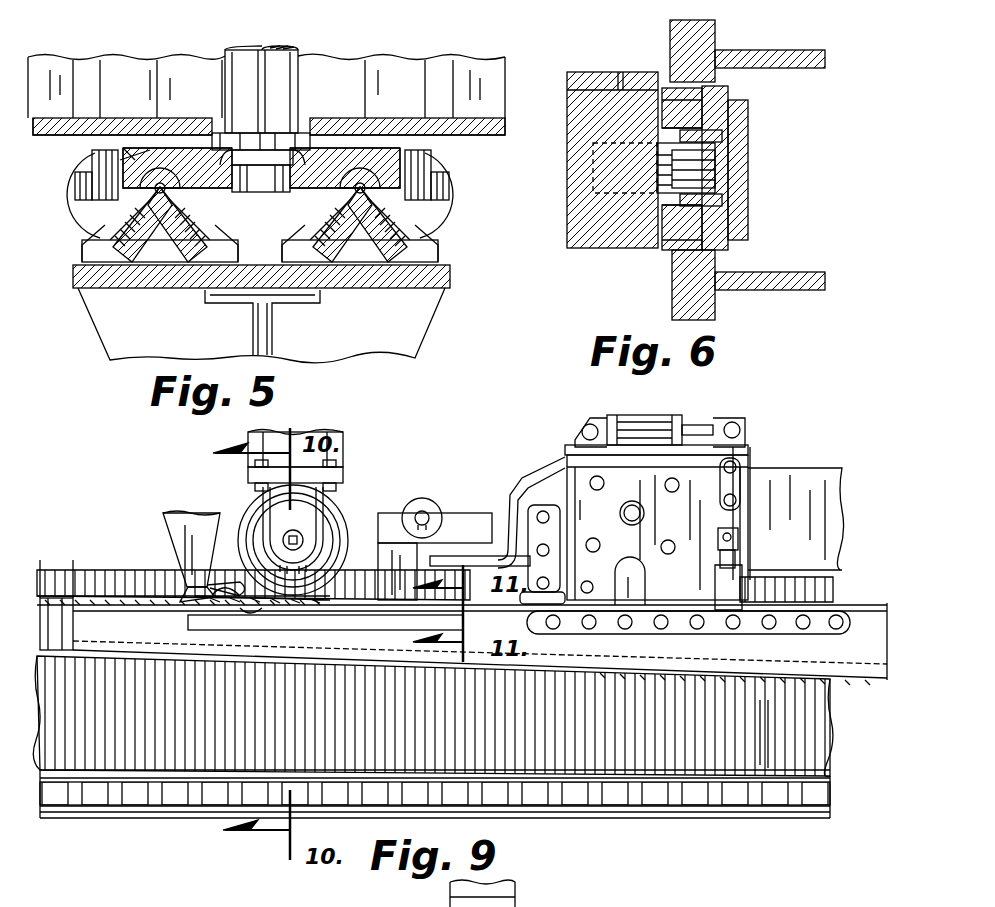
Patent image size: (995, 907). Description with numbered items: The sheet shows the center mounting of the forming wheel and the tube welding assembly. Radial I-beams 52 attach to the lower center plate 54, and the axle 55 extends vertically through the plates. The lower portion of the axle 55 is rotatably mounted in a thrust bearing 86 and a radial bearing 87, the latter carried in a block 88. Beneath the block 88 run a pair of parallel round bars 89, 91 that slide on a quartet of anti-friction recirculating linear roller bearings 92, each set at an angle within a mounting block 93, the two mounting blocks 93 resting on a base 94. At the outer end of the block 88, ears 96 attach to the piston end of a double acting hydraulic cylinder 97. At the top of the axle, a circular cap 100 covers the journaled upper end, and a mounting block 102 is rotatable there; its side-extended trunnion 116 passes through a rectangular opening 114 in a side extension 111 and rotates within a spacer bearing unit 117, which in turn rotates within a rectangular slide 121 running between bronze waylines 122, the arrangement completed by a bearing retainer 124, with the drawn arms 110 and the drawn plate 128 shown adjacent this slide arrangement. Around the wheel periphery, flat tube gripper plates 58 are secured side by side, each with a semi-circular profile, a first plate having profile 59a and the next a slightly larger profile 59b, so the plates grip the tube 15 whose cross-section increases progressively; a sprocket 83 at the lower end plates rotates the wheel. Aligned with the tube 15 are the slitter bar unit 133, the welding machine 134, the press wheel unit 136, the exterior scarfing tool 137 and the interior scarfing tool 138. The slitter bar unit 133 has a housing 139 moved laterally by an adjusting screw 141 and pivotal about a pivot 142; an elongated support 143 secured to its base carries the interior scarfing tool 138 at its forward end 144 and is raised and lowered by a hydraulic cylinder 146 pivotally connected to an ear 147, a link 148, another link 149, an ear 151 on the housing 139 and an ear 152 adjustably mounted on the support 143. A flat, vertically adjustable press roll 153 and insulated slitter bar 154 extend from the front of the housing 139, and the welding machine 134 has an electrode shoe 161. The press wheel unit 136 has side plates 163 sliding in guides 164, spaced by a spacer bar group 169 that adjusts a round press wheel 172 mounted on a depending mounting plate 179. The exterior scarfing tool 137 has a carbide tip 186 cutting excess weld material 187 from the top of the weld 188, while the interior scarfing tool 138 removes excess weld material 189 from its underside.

In FIG. 5, the I-beam 52 is at (60, 66).
In FIG. 5, the lower center plate 54 is at (135, 126).
In FIG. 5, the axle 55 is at (290, 70).
In FIG. 5, the thrust bearing 86 is at (302, 138).
In FIG. 5, the radial bearing 87 is at (265, 182).
In FIG. 5, the block 88 is at (312, 178).
In FIG. 5, the bar 89 is at (168, 178).
In FIG. 5, the ear 96 is at (105, 158).
In FIG. 5, the double acting hydraulic cylinder 97 is at (75, 183).
In FIG. 5, the bar 91 is at (158, 232).
In FIG. 5, the bearing 92 is at (110, 242).
In FIG. 5, the mounting block 93 is at (90, 238).
In FIG. 5, the base 94 is at (425, 318).
In FIG. 6, the circular cap 100 is at (600, 72).
In FIG. 6, the mounting block 102 is at (605, 240).
In FIG. 6, the arm 110 is at (800, 55).
In FIG. 6, the side extension 111 is at (685, 37).
In FIG. 6, the rectangular opening 114 is at (698, 256).
In FIG. 6, the trunnion 116 is at (712, 173).
In FIG. 6, the spacer bearing unit 117 is at (725, 146).
In FIG. 6, the rectangular slide 121 is at (668, 90).
In FIG. 6, the bronze wayline 122 is at (668, 252).
In FIG. 6, the bearing retainer 124 is at (742, 132).
In FIG. 6, the plate 128 is at (716, 98).
In FIG. 9, the tube 15 is at (416, 658).
In FIG. 9, the tube gripper plate 58 is at (112, 765).
In FIG. 9, the profile 59a is at (760, 765).
In FIG. 9, the profile 59b is at (768, 768).
In FIG. 9, the sprocket 83 is at (195, 795).
In FIG. 9, the slitter bar unit 133 is at (762, 420).
In FIG. 9, the welding machine 134 is at (428, 498).
In FIG. 9, the press wheel unit 136 is at (356, 460).
In FIG. 9, the exterior scarfing tool 137 is at (175, 527).
In FIG. 9, the interior scarfing tool 138 is at (215, 597).
In FIG. 9, the housing 139 is at (702, 520).
In FIG. 9, the adjusting screw 141 is at (636, 514).
In FIG. 9, the pivot 142 is at (590, 542).
In FIG. 9, the support 143 is at (798, 627).
In FIG. 9, the forward end 144 is at (195, 628).
In FIG. 9, the hydraulic cylinder 146 is at (635, 418).
In FIG. 9, the ear 147 is at (583, 430).
In FIG. 9, the link 148 is at (748, 442).
In FIG. 9, the link 149 is at (737, 492).
In FIG. 9, the ear 151 is at (736, 468).
In FIG. 9, the ear 152 is at (750, 550).
In FIG. 9, the press roll 153 is at (538, 604).
In FIG. 9, the slitter bar 154 is at (472, 570).
In FIG. 9, the electrode shoe 161 is at (358, 580).
In FIG. 9, the side plate 163 is at (452, 901).
In FIG. 9, the guide 164 is at (250, 441).
In FIG. 9, the spacer bar group 169 is at (248, 476).
In FIG. 9, the press wheel 172 is at (342, 512).
In FIG. 9, the mounting plate 179 is at (330, 502).
In FIG. 9, the carbide tip 186 is at (205, 588).
In FIG. 9, the excess weld material 187 is at (236, 588).
In FIG. 9, the weld 188 is at (285, 600).
In FIG. 9, the excess weld material 189 is at (262, 640).